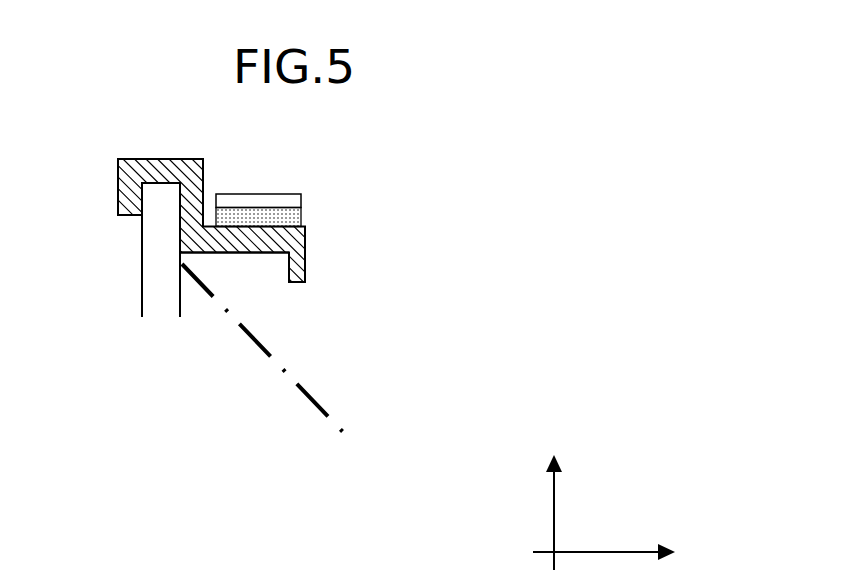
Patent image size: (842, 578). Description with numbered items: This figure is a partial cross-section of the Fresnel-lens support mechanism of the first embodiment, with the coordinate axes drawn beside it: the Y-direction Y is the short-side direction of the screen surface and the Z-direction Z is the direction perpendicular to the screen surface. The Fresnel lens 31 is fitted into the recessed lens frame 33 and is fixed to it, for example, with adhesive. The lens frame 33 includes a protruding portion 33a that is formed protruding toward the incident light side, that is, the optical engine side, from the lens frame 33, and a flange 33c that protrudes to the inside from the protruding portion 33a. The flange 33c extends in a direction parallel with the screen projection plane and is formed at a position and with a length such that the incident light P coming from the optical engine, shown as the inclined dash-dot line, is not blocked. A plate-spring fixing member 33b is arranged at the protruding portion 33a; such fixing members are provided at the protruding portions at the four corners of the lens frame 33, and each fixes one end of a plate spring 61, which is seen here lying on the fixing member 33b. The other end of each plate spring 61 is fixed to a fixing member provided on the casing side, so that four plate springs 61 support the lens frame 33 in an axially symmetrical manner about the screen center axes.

The Fresnel lens 31 is at (173, 309).
The lens frame 33 is at (147, 157).
The protruding portion 33a is at (247, 253).
The plate-spring fixing member 33b is at (267, 221).
The flange 33c is at (307, 265).
The plate spring 61 is at (263, 193).
The incident light P is at (295, 385).
The Y-direction Y is at (554, 495).
The Z-direction Z is at (617, 550).